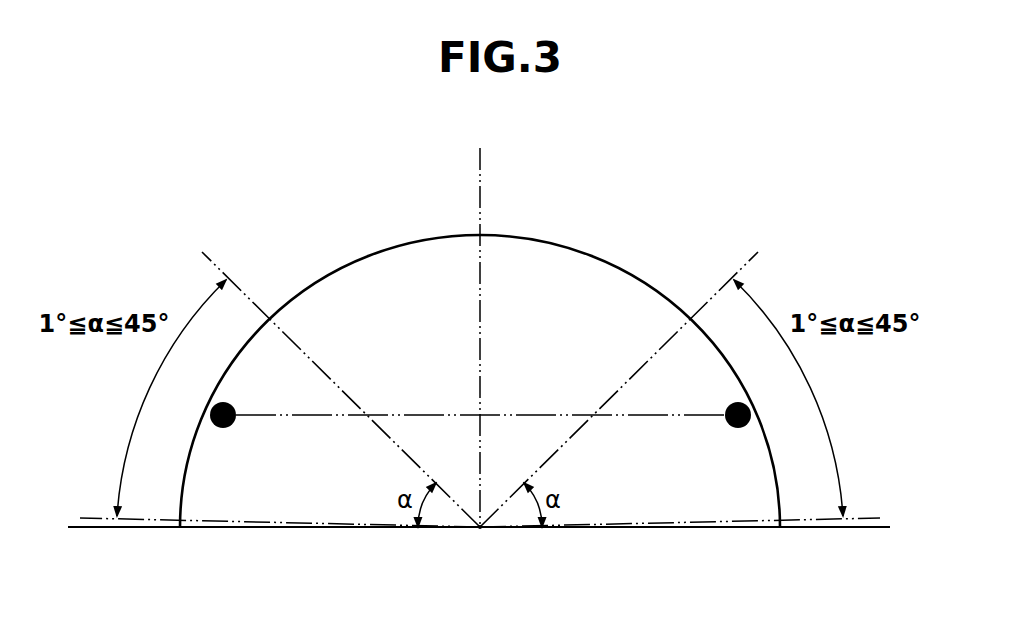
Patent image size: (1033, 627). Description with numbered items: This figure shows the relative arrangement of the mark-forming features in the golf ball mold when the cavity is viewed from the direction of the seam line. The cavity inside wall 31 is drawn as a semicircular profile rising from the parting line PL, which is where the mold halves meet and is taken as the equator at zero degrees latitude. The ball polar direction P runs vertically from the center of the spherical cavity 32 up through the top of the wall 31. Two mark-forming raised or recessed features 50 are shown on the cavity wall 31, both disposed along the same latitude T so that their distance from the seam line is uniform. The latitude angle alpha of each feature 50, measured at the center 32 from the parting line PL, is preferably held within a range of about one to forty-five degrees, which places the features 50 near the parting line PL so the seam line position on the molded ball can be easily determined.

The cavity inside wall 31 is at (610, 260).
The center of the spherical cavity 32 is at (480, 530).
The mark-forming raised or recessed features 50 is at (219, 428).
The ball polar direction P is at (480, 235).
The latitude T is at (385, 413).
The parting line PL is at (498, 529).